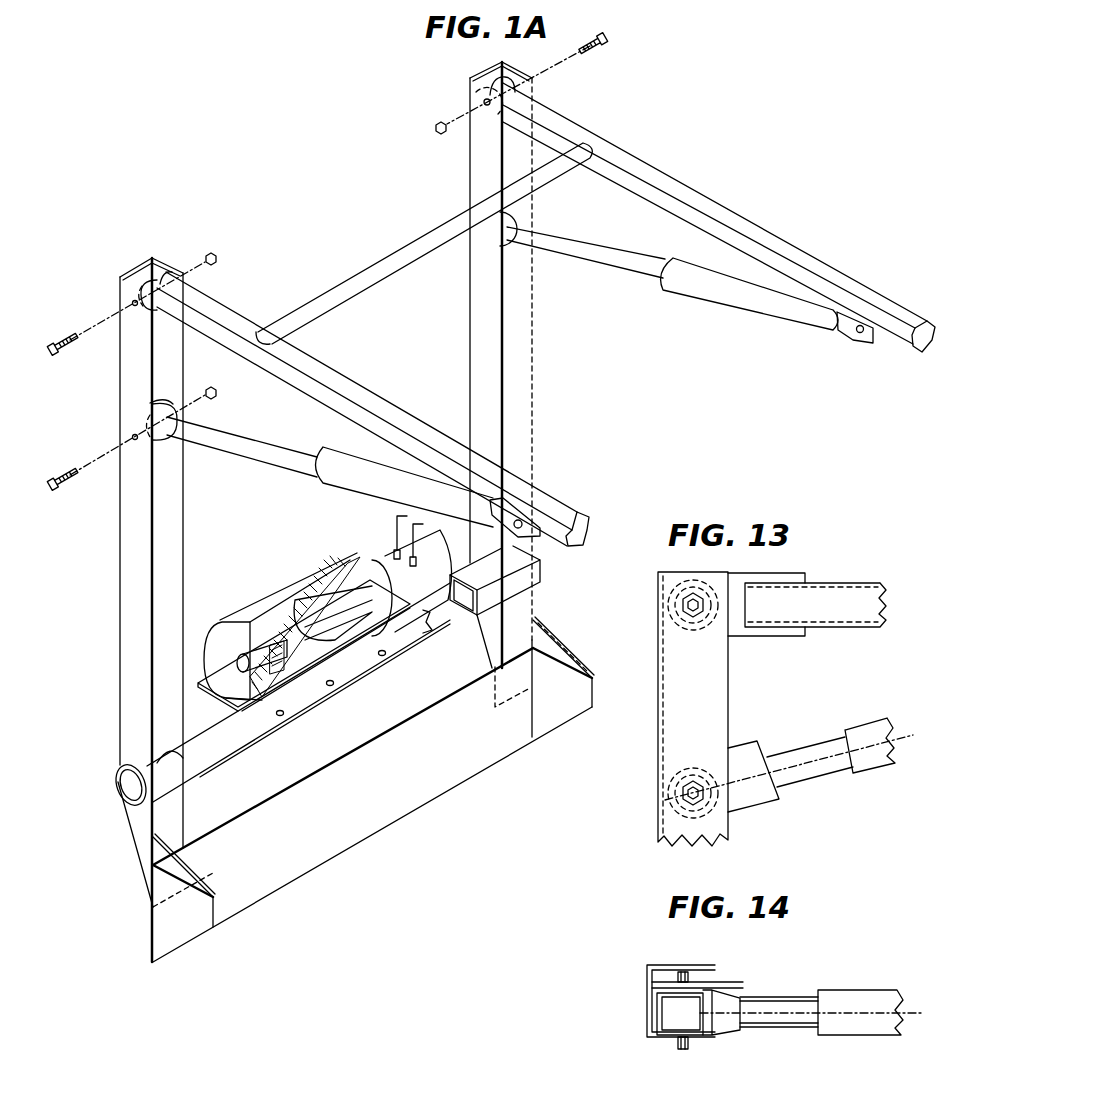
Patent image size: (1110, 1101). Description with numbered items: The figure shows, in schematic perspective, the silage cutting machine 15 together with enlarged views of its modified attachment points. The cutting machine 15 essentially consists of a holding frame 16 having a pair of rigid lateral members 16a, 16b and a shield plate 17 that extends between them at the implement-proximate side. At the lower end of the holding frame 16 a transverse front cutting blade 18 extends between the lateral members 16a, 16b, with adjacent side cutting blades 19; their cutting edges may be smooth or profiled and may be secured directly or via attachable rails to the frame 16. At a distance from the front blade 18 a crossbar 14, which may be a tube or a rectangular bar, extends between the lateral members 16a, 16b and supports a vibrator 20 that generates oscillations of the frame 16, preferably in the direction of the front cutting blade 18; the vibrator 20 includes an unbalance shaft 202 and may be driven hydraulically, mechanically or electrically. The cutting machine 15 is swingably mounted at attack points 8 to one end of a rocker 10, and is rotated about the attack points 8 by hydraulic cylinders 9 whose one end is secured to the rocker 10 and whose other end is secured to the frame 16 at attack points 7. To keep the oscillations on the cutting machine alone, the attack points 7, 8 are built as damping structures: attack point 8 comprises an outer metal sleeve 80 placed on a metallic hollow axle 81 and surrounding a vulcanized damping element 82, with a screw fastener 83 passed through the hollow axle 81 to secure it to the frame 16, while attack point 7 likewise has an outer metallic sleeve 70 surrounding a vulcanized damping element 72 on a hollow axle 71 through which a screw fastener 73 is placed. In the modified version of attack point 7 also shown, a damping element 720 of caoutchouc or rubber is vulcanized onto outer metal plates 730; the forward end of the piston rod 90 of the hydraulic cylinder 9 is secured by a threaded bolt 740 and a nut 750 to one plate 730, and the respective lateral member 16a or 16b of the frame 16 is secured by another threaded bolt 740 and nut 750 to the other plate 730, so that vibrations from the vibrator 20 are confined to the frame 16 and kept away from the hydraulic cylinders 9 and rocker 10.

In FIG. 1A, the attack point 7 is at (133, 437).
In FIG. 13, the attack point 7 is at (672, 798).
In FIG. 14, the attack point 7 is at (727, 971).
In FIG. 1A, the attack point 8 is at (134, 303).
In FIG. 13, the attack point 8 is at (672, 645).
In FIG. 1A, the hydraulic cylinder 9 is at (722, 292).
In FIG. 13, the hydraulic cylinder 9 is at (877, 764).
In FIG. 14, the hydraulic cylinder 9 is at (863, 1000).
In FIG. 1A, the rocker 10 is at (640, 182).
In FIG. 13, the rocker 10 is at (815, 605).
In FIG. 1A, the crossbar 14 is at (227, 745).
In FIG. 1A, the silage cutting machine 15 is at (384, 806).
In FIG. 1A, the holding frame 16 is at (548, 389).
In FIG. 13, the holding frame 16 is at (680, 708).
In FIG. 14, the holding frame 16 is at (640, 983).
In FIG. 1A, the lateral member 16a is at (140, 613).
In FIG. 1A, the lateral member 16b is at (525, 608).
In FIG. 1A, the shield plate 17 is at (417, 790).
In FIG. 1A, the front cutting blade 18 is at (473, 776).
In FIG. 1A, the side cutting blade 19 is at (566, 727).
In FIG. 1A, the vibrator 20 is at (300, 579).
In FIG. 1A, the outer metallic sleeve 70 is at (170, 405).
In FIG. 1A, the hollow axle 71 is at (150, 425).
In FIG. 1A, the damping element 72 is at (152, 410).
In FIG. 1A, the screw fastener 73 is at (75, 478).
In FIG. 1A, the outer metal sleeve 80 is at (163, 272).
In FIG. 1A, the metallic hollow axle 81 is at (142, 292).
In FIG. 1A, the damping element 82 is at (152, 282).
In FIG. 1A, the screw fastener 83 is at (67, 335).
In FIG. 1A, the piston rod 90 is at (623, 268).
In FIG. 13, the piston rod 90 is at (808, 760).
In FIG. 14, the piston rod 90 is at (787, 1012).
In FIG. 1A, the unbalance shaft 202 is at (335, 635).
In FIG. 14, the damping element 720 is at (667, 1007).
In FIG. 14, the outer metal plate 730 is at (718, 1032).
In FIG. 14, the threaded bolt 740 is at (682, 973).
In FIG. 14, the nut 750 is at (677, 978).